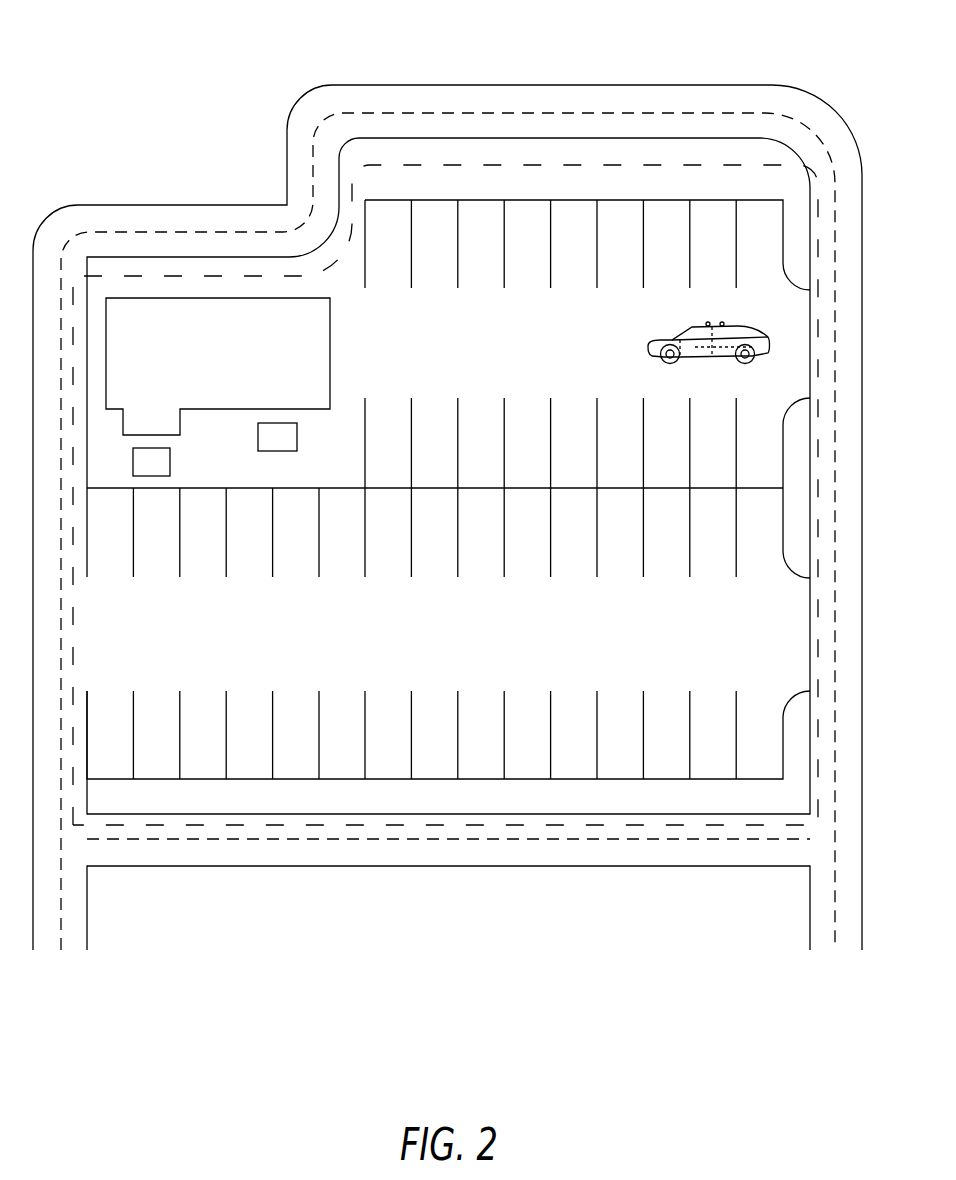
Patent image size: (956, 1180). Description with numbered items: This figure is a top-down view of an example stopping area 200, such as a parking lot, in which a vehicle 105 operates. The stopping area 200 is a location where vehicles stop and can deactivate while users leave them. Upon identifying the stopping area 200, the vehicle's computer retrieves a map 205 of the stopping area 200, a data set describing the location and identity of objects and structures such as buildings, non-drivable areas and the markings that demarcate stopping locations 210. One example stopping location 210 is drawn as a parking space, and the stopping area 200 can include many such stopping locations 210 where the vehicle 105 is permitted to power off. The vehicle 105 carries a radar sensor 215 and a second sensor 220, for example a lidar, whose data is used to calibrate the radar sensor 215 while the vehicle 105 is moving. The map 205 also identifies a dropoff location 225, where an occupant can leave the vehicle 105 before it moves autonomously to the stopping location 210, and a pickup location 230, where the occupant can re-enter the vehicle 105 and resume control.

The stopping area 200 is at (215, 54).
The map 205 is at (193, 275).
The stopping location 210 is at (523, 280).
The vehicle 105 is at (707, 358).
The radar sensor 215 is at (708, 322).
The second sensor 220 is at (722, 322).
The dropoff location 225 is at (278, 451).
The pickup location 230 is at (148, 476).